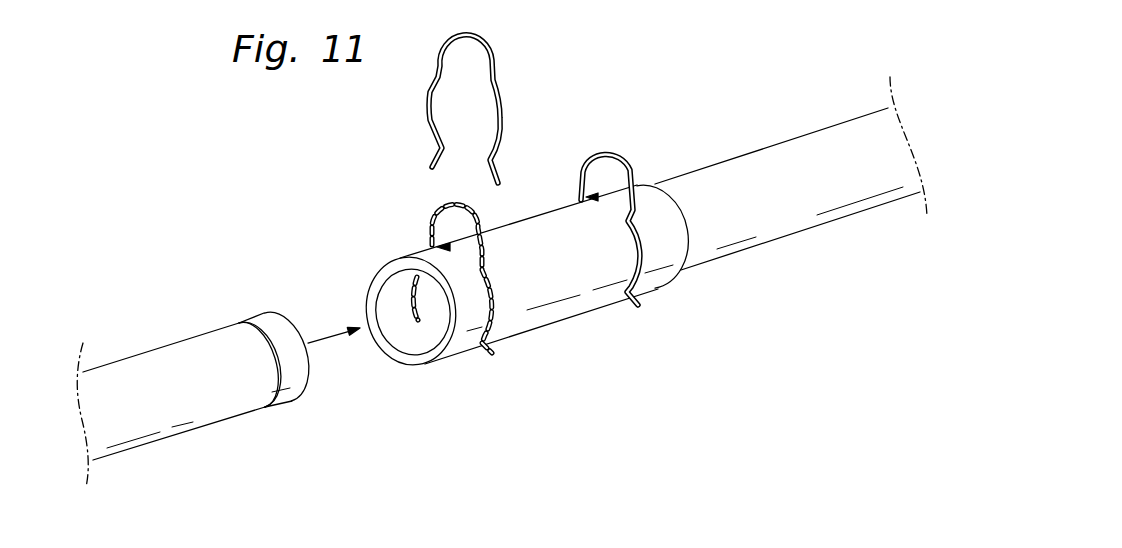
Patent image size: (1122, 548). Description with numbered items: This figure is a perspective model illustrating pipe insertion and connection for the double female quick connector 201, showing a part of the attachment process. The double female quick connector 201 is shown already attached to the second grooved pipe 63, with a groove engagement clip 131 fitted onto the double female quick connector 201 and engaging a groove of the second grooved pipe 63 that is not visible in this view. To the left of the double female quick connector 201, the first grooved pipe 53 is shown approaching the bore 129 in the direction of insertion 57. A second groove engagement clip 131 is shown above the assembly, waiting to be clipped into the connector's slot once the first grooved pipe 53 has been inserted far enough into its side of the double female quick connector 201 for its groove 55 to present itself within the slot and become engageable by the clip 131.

The first grooved pipe 53 is at (172, 358).
The groove 55 is at (273, 387).
The insertion direction / end portion 57 is at (305, 311).
The second grooved pipe 63 is at (742, 168).
The bore 129 is at (425, 345).
The groove engagement clip 131 is at (493, 72).
The double female quick connector 201 is at (513, 386).